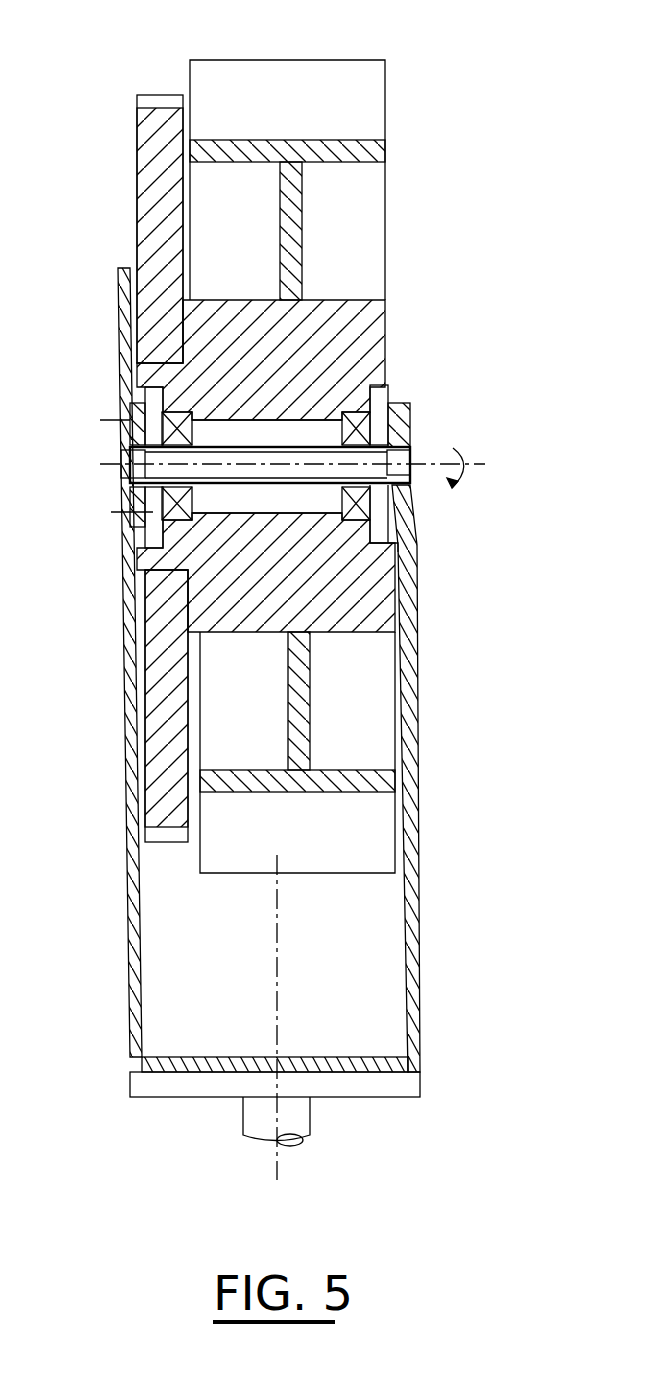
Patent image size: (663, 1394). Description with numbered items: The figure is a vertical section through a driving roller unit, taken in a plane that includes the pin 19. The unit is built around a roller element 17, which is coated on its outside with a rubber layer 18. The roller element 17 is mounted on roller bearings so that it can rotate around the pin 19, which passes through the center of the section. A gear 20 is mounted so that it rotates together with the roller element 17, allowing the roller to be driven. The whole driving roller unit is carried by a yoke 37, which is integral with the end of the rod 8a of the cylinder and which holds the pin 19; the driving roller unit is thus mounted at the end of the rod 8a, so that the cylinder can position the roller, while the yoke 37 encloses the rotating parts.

The rubber layer 18 is at (292, 78).
The gear 20 is at (150, 253).
The roller element 17 is at (357, 350).
The pin 19 is at (372, 470).
The yoke 37 is at (132, 1012).
The rod 8a is at (300, 1118).